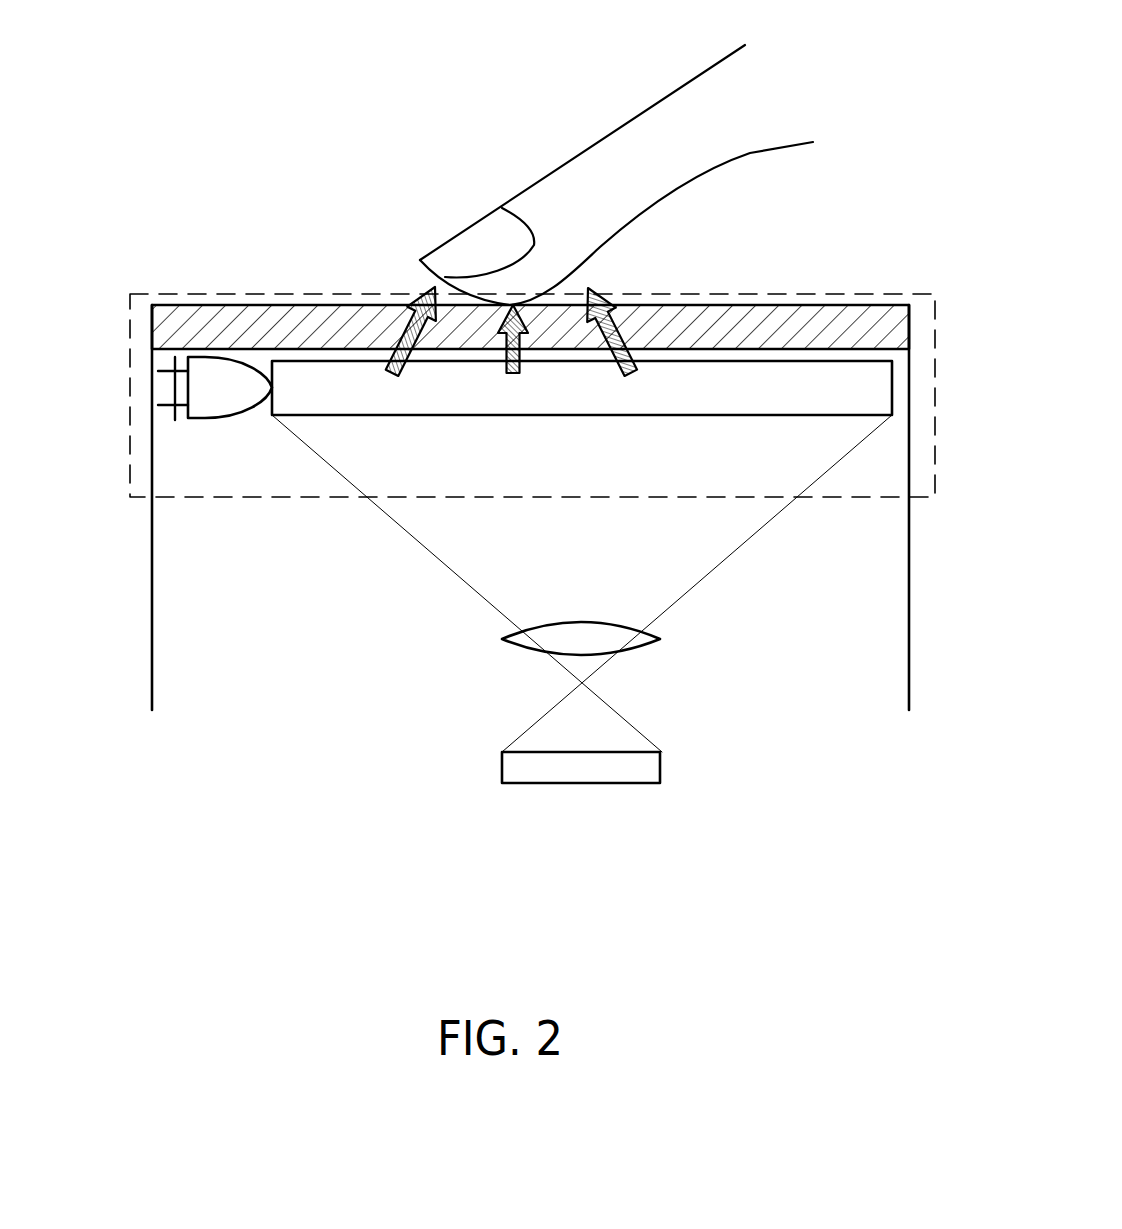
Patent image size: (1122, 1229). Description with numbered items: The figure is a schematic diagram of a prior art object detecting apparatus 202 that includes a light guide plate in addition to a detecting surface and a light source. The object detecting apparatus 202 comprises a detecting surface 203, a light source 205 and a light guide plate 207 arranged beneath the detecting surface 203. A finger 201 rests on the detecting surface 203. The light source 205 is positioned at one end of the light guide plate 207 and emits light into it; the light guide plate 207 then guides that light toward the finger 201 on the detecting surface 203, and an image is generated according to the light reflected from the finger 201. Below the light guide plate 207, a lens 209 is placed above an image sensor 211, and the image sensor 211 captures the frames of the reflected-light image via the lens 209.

The finger 201 is at (583, 168).
The object detecting apparatus 202 is at (130, 335).
The detecting surface 203 is at (270, 330).
The light source 205 is at (222, 420).
The light guide plate 207 is at (582, 415).
The lens 209 is at (530, 650).
The image sensor 211 is at (502, 764).